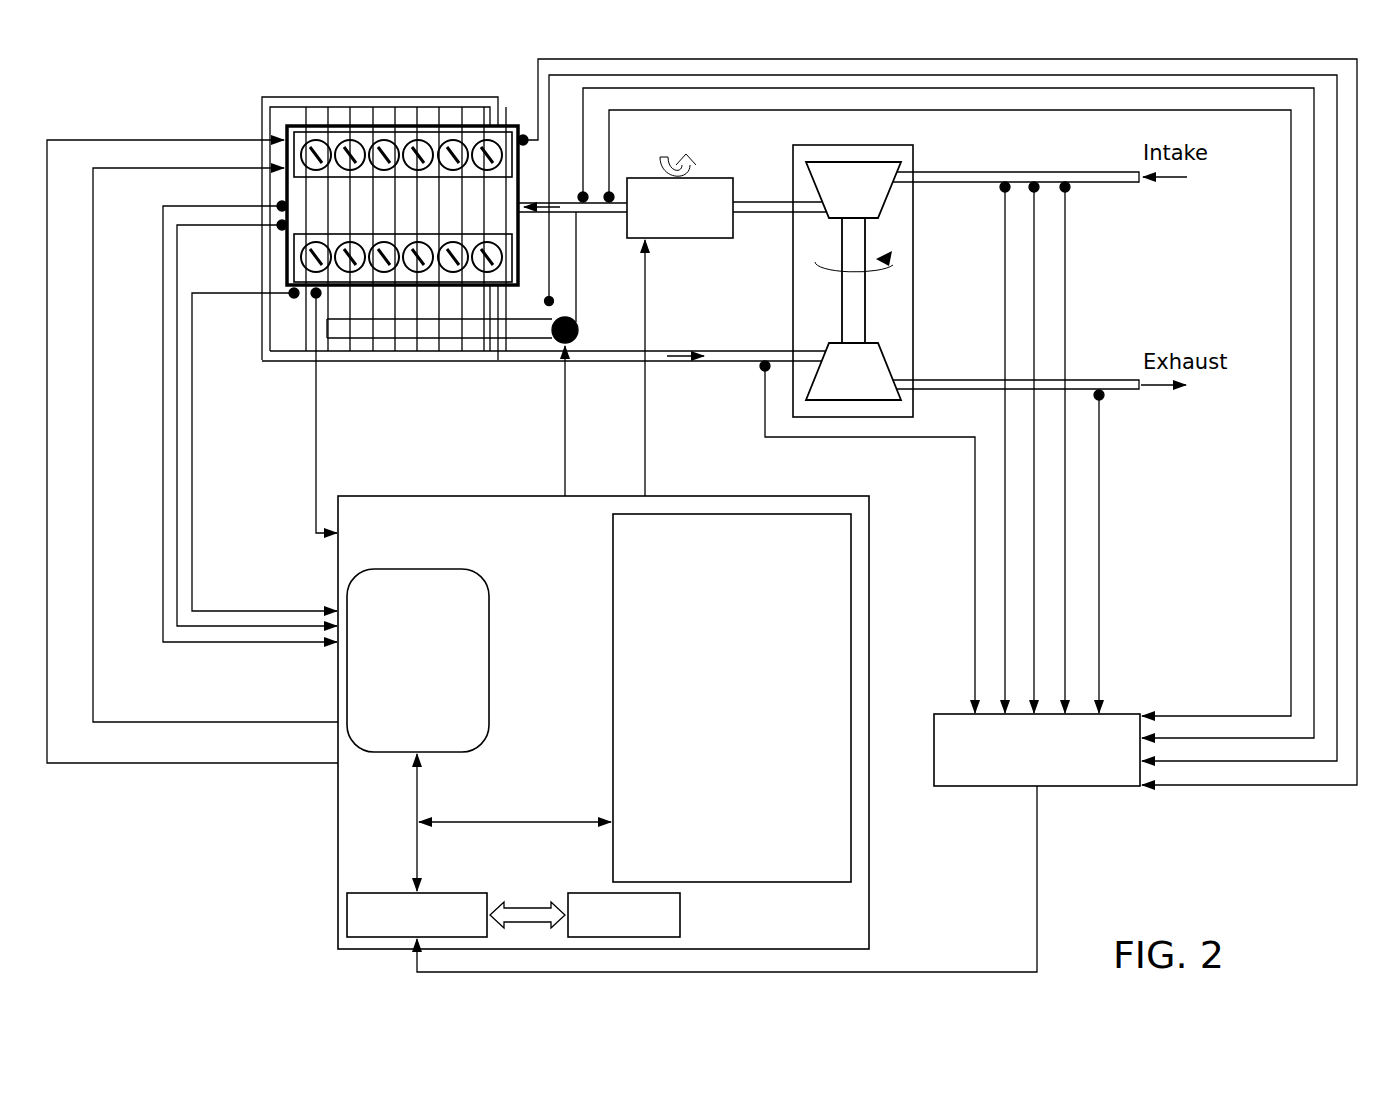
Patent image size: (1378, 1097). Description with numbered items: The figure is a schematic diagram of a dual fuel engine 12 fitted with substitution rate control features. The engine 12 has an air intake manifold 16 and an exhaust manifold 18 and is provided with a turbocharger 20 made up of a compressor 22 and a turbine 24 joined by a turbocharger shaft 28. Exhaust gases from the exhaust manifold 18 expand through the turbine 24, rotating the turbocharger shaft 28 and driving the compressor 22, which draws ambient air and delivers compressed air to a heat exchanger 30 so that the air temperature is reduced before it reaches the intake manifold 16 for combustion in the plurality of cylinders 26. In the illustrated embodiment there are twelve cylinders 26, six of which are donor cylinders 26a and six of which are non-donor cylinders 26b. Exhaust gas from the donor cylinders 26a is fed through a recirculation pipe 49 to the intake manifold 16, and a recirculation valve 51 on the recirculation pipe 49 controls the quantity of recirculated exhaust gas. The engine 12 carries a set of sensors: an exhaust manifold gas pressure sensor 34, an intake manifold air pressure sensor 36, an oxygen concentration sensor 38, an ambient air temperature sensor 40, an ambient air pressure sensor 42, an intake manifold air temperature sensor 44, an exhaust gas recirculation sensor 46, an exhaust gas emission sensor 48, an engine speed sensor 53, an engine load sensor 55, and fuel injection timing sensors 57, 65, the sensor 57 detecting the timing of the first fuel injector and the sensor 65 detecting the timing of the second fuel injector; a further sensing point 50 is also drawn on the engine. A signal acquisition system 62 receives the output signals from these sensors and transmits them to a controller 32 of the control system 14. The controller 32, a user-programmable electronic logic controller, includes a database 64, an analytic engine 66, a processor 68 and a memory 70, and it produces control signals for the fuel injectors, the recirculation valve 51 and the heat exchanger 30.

The engine 12 is at (359, 235).
The control system 14 is at (707, 706).
The air intake manifold 16 is at (625, 220).
The exhaust manifold 18 is at (720, 350).
The turbocharger 20 is at (889, 281).
The compressor 22 is at (841, 201).
The turbine 24 is at (841, 385).
The cylinders 26 is at (356, 171).
The donor cylinders 26a is at (343, 271).
The non-donor cylinders 26b is at (377, 140).
The turbocharger shaft 28 is at (866, 332).
The heat exchanger 30 is at (703, 240).
The controller 32 is at (631, 695).
The exhaust manifold gas pressure sensor 34 is at (762, 372).
The intake manifold air pressure sensor 36 is at (580, 192).
The oxygen concentration sensor 38 is at (1003, 192).
The ambient air temperature sensor 40 is at (1034, 182).
The ambient air pressure sensor 42 is at (1068, 192).
The intake manifold air temperature sensor 44 is at (612, 190).
The exhaust gas recirculation sensor 46 is at (548, 307).
The exhaust gas emission sensor 48 is at (1101, 400).
The recirculation pipe 49 is at (468, 330).
The engine sensor 50 is at (523, 134).
The recirculation valve 51 is at (578, 332).
The engine speed sensor 53 is at (276, 204).
The engine load sensor 55 is at (276, 228).
The fuel injection timing sensor 57 is at (294, 300).
The signal acquisition system 62 is at (1128, 712).
The database 64 is at (485, 575).
The fuel injection timing sensor 65 is at (316, 300).
The analytic engine 66 is at (851, 553).
The processor 68 is at (365, 893).
The memory 70 is at (683, 915).